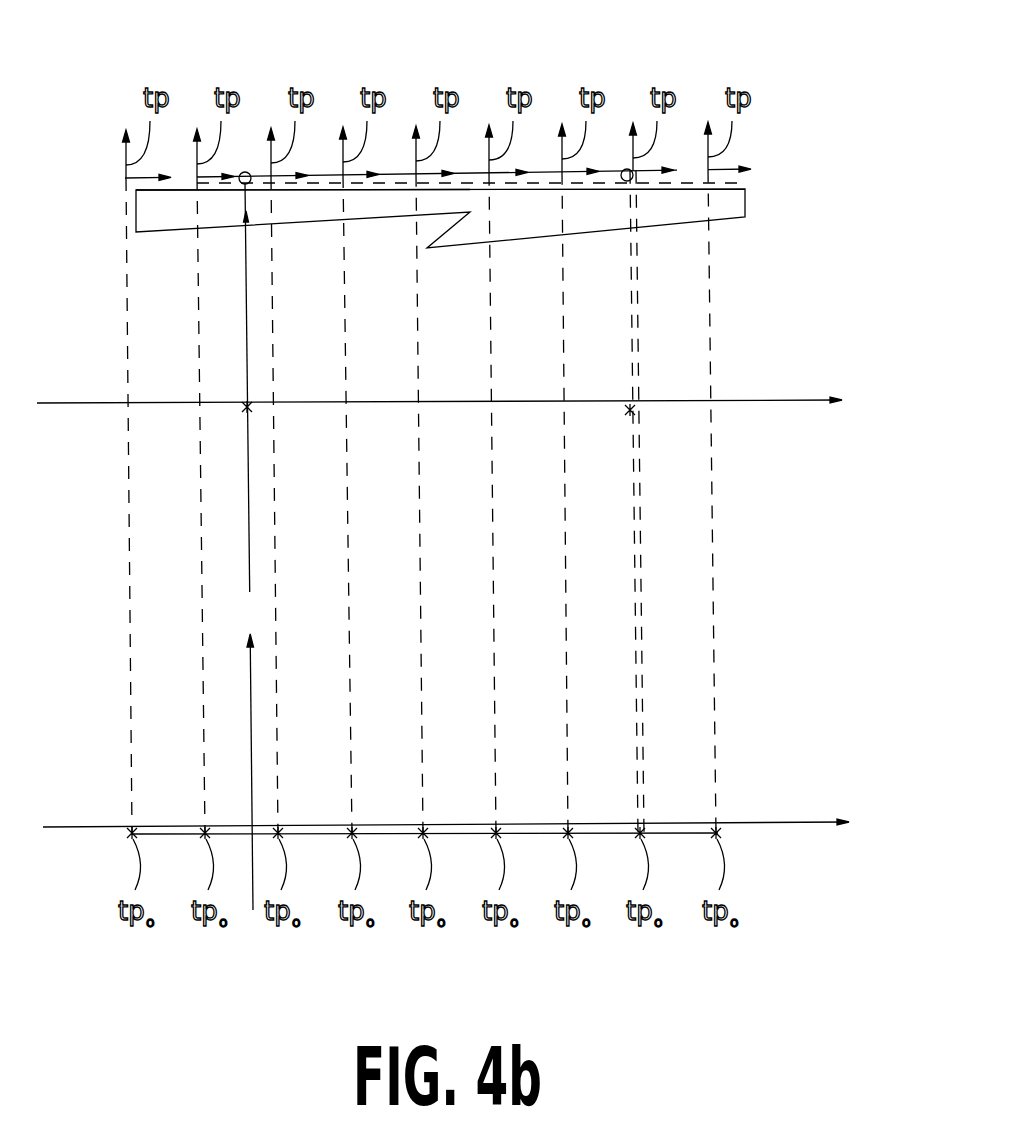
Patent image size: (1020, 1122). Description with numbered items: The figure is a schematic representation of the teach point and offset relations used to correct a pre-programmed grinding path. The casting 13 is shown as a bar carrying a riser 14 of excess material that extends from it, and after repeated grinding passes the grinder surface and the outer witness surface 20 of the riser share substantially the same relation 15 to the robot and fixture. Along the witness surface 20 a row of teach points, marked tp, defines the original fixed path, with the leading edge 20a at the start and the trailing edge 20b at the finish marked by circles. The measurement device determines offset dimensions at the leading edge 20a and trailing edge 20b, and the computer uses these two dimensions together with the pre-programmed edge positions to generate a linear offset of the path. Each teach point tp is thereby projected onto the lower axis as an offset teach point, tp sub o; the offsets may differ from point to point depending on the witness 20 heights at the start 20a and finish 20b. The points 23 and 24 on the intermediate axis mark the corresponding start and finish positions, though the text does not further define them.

The casting 13 is at (728, 203).
The riser 14 is at (533, 182).
The relation 15 is at (367, 183).
The witness surface 20 is at (475, 172).
The leading edge 20a is at (244, 172).
The trailing edge 20b is at (624, 169).
The first sample point 23 is at (245, 407).
The second sample point 24 is at (635, 411).